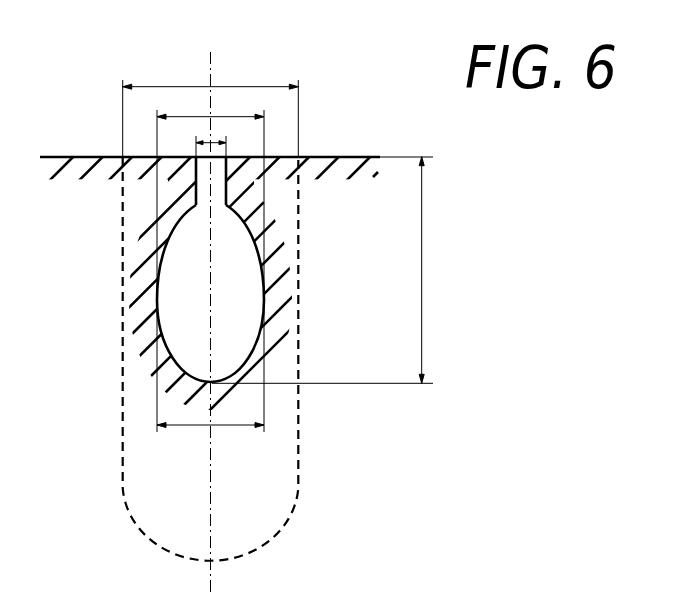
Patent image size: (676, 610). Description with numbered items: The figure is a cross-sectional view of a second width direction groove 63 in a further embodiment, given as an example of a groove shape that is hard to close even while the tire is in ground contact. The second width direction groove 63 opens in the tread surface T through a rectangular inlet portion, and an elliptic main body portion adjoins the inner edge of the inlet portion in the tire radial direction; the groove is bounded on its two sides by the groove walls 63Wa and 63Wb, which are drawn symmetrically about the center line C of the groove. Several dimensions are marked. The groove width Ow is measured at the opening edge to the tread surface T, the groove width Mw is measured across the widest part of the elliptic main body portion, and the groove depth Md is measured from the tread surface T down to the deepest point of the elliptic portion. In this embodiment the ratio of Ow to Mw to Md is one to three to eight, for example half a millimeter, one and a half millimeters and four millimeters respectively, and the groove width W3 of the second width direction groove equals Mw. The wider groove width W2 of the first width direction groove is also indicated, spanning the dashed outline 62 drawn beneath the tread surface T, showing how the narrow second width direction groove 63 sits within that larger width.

The groove (recess) outline 62 is at (227, 498).
The second width direction groove 63 is at (208, 269).
The groove wall of the second width direction groove 63Wa is at (158, 252).
The groove wall of the second width direction groove 63Wb is at (262, 258).
The tread surface T is at (83, 157).
The center axis C is at (210, 306).
The groove width of the first width direction groove W2 is at (211, 108).
The groove width of the second width direction groove W3 is at (210, 262).
The groove width at an opening edge Ow is at (197, 139).
The groove depth of the second width direction groove Md is at (331, 270).
The groove width of the main body portion Mw is at (210, 439).